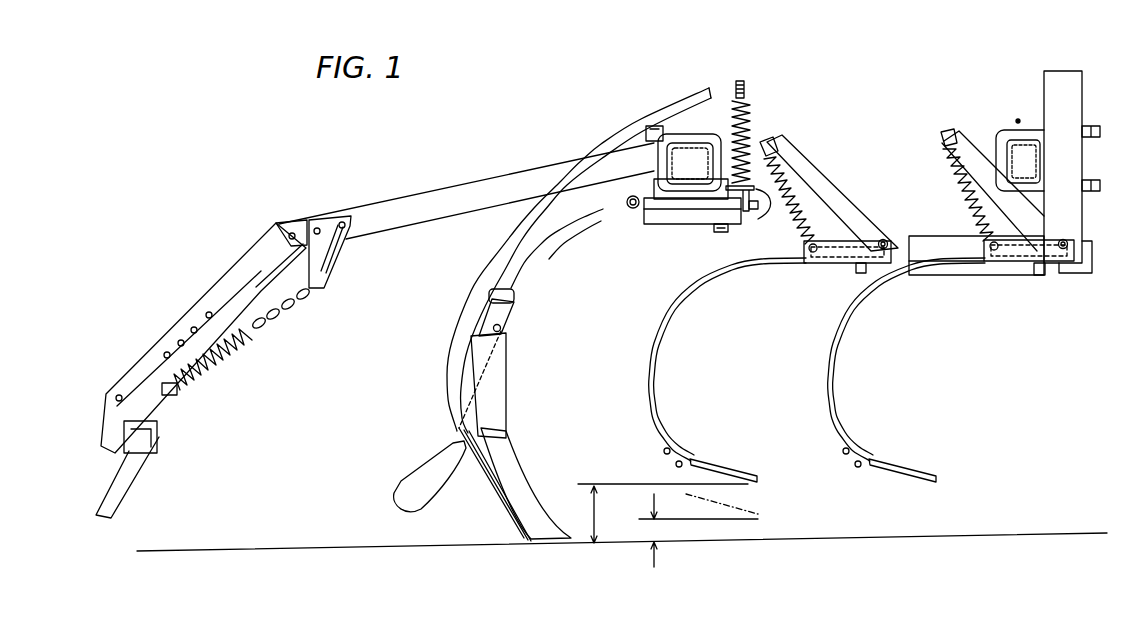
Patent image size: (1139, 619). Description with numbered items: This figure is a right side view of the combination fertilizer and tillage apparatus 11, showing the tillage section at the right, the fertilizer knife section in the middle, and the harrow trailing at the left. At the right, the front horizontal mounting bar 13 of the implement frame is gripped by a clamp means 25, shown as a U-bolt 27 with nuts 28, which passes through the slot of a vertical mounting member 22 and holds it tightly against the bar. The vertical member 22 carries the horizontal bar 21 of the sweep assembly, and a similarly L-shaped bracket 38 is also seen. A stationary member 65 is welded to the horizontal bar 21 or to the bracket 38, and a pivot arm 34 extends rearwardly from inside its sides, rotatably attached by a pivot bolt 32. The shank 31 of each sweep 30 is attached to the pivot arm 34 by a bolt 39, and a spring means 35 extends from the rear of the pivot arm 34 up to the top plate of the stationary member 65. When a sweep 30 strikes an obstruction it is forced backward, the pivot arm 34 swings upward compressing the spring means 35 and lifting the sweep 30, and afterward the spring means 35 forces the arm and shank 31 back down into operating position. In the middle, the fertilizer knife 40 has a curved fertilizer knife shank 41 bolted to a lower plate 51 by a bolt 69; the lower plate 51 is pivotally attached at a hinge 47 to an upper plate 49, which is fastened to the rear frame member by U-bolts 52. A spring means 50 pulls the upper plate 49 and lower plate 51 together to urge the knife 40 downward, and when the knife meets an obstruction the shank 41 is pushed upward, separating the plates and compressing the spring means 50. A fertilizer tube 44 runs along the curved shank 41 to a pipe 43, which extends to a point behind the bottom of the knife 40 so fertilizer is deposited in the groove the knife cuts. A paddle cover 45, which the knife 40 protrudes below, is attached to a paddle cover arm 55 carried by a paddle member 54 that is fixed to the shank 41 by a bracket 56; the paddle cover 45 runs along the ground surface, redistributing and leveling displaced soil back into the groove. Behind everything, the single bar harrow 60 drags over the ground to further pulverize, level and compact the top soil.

The combination fertilizer and tillage apparatus 11 is at (1098, 215).
The front horizontal mounting bar 13 is at (1070, 142).
The horizontal bar 21 is at (1070, 273).
The vertical mounting member 22 is at (1068, 70).
The clamp means 25 is at (1017, 118).
The U-bolt 27 is at (997, 140).
The nuts 28 is at (1085, 125).
The sweep 30 is at (748, 453).
The shank 31 is at (657, 363).
The pivot bolt 32 is at (883, 239).
The pivot arm 34 is at (838, 262).
The spring means 35 is at (800, 243).
The bracket 38 is at (922, 276).
The bolt 39 is at (858, 274).
The fertilizer knife 40 is at (534, 478).
The fertilizer knife shank 41 is at (547, 242).
The pipe 43 is at (490, 488).
The fertilizer tube 44 is at (445, 364).
The paddle cover 45 is at (395, 490).
The hinge 47 is at (627, 200).
The upper plate 49 is at (755, 216).
The spring means 50 is at (748, 116).
The lower plate 51 is at (752, 210).
The U-bolts 52 is at (680, 133).
The paddle member 54 is at (505, 323).
The paddle cover arm 55 is at (507, 363).
The bracket 56 is at (513, 285).
The single bar harrow 60 is at (210, 300).
The stationary member 65 is at (855, 170).
The bolt 69 is at (716, 232).